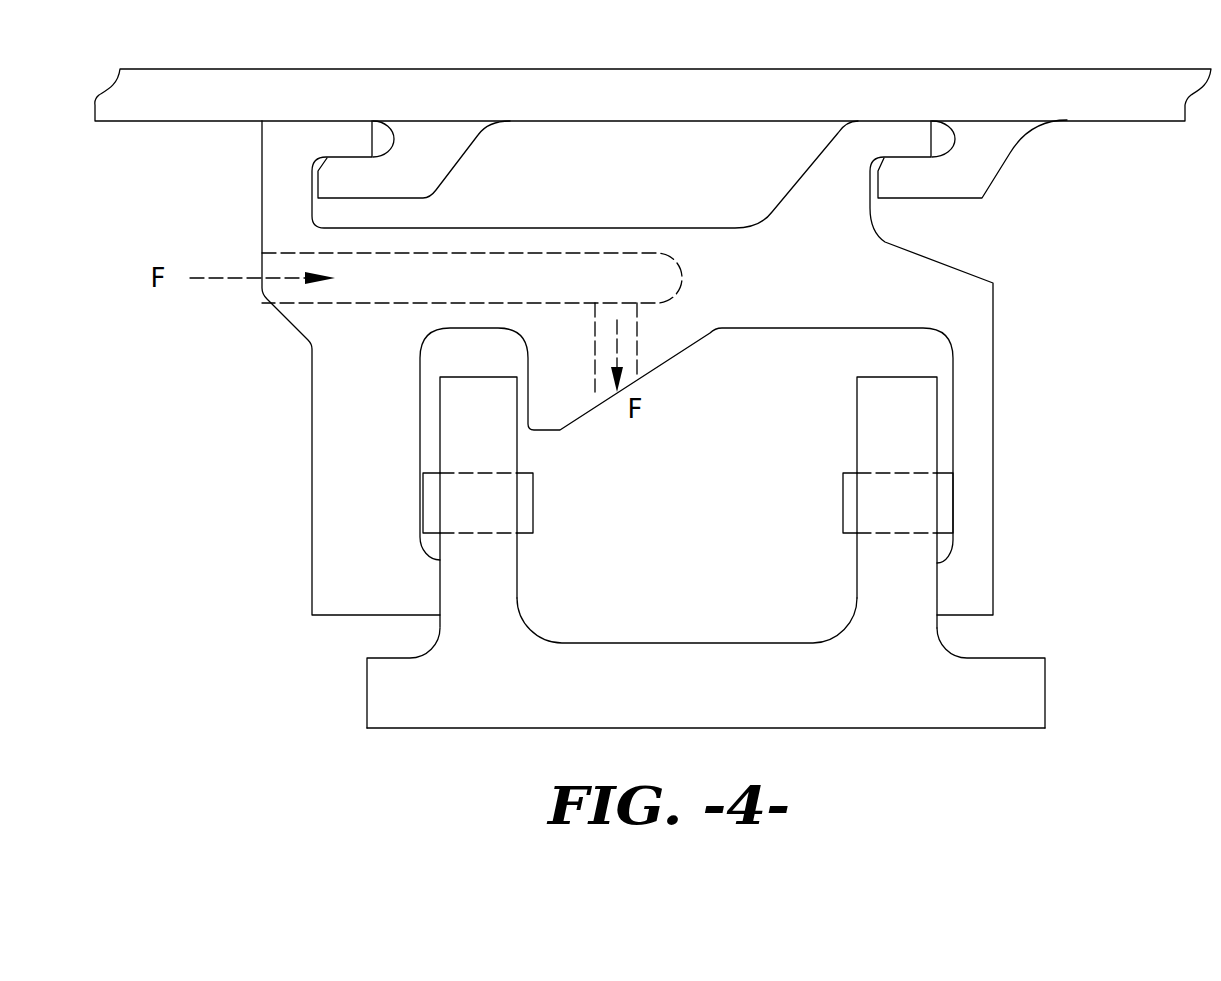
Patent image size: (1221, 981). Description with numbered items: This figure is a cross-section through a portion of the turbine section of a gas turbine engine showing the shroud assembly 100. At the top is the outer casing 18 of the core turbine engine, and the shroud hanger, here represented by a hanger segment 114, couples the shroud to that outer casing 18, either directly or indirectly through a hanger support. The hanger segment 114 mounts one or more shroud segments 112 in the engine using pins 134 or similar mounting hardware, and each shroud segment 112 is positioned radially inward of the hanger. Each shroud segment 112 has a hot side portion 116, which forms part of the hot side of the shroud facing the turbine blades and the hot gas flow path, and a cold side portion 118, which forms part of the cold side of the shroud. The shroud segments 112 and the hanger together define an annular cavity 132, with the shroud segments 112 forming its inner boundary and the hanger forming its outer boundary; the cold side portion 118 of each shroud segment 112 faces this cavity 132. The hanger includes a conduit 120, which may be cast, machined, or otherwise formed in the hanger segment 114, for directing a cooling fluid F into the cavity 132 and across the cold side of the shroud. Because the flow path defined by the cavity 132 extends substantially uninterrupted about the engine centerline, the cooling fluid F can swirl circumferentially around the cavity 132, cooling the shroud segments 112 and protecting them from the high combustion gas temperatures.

The outer casing 18 is at (745, 85).
The shroud assembly 100 is at (682, 168).
The shroud segment 112 is at (458, 702).
The hanger segment 114 is at (330, 485).
The hot side portion 116 is at (873, 732).
The cold side portion 118 is at (657, 642).
The conduit 120 is at (498, 262).
The cavity 132 is at (798, 405).
The pin 134 is at (535, 508).